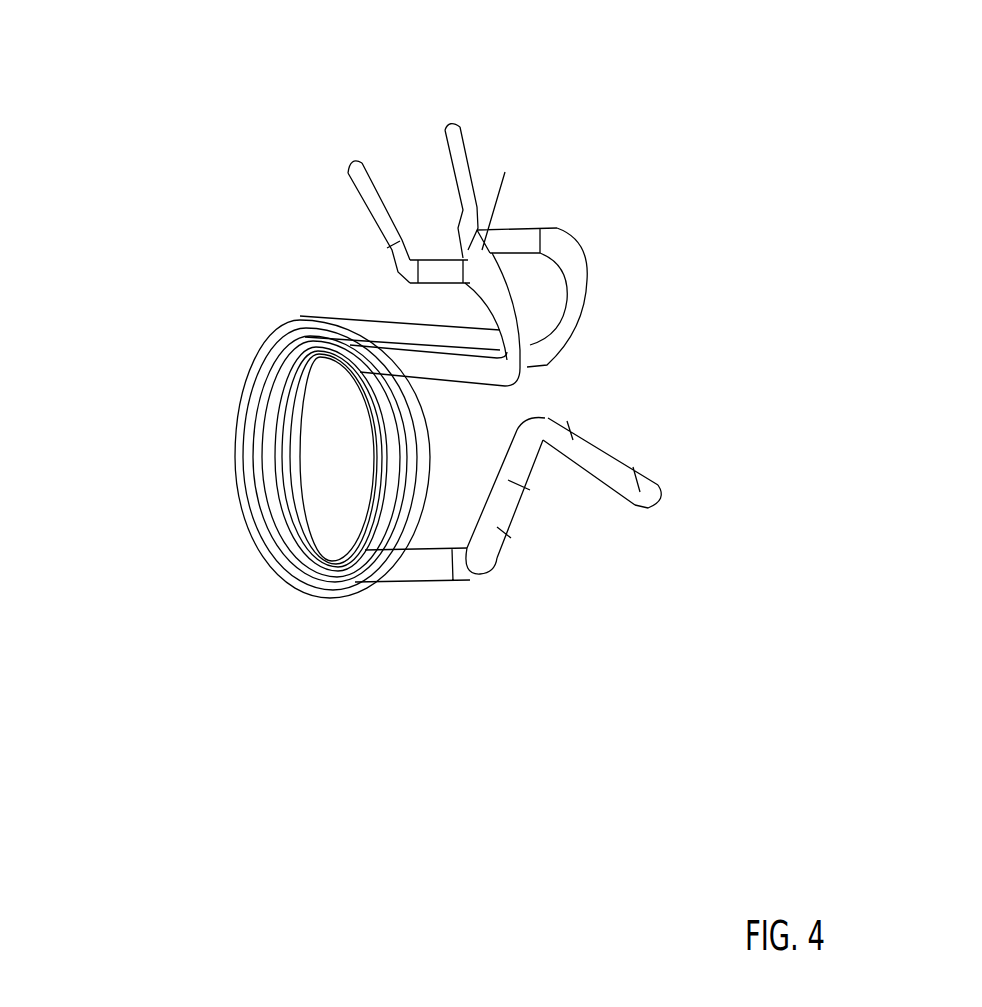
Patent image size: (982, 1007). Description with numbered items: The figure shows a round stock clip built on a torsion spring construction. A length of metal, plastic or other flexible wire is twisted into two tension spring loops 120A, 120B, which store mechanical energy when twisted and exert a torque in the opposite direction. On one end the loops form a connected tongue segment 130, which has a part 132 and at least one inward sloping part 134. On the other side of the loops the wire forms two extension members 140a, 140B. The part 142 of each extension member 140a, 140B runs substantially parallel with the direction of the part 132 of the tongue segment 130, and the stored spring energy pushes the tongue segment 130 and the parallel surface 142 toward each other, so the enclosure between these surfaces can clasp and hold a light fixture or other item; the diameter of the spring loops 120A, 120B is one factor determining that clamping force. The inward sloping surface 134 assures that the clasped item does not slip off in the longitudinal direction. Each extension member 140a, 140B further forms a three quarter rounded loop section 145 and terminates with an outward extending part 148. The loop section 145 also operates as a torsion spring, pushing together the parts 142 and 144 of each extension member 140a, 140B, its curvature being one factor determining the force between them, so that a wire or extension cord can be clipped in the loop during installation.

The tension spring loop 120A is at (233, 435).
The tension spring loop 120B is at (265, 560).
The tongue segment 130 is at (655, 495).
The part of the tongue segment 132 is at (422, 587).
The inward sloping part 134 is at (520, 513).
The extension member 140a is at (548, 350).
The extension member 140B is at (507, 373).
The parallel part of the extension member 142 is at (405, 320).
The part of the extension member 144 is at (530, 227).
The loop section 145 is at (517, 305).
The outward extending part 148 is at (445, 127).